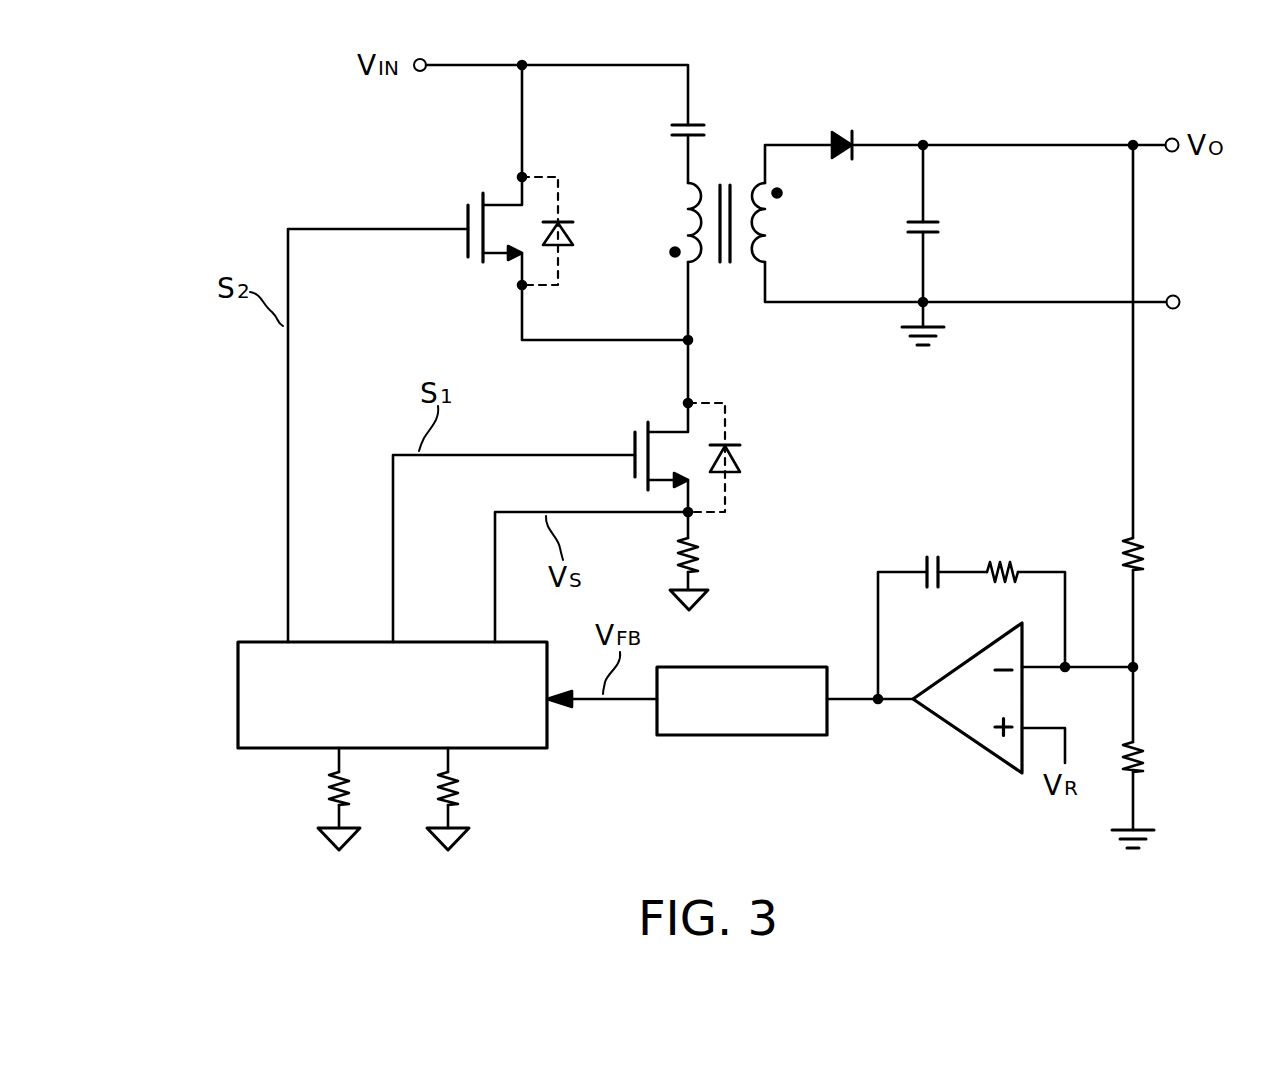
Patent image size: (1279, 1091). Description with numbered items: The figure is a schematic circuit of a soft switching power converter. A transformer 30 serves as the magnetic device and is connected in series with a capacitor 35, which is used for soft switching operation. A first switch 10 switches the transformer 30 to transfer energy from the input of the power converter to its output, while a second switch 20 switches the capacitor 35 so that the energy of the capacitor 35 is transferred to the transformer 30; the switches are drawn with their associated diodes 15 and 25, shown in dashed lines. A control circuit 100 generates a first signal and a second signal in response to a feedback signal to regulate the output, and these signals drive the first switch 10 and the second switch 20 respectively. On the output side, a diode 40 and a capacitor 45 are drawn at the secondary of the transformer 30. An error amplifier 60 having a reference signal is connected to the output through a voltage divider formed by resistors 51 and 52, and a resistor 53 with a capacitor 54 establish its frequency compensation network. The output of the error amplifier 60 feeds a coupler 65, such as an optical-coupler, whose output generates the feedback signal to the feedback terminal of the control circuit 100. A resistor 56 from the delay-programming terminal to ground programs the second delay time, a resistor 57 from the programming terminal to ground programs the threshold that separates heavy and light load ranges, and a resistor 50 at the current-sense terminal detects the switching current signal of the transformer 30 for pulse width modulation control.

The first switch 10 is at (630, 430).
The body diode of first transistor 15 is at (742, 460).
The second switch 20 is at (460, 205).
The body diode of second transistor 25 is at (573, 236).
The transformer 30 is at (725, 166).
The capacitor 35 is at (668, 130).
The output rectifier diode 40 is at (840, 132).
The output capacitor 45 is at (945, 226).
The resistor 50 is at (706, 553).
The resistor 51 is at (1150, 556).
The resistor 52 is at (1148, 752).
The resistor 53 is at (1004, 553).
The capacitor 54 is at (932, 553).
The resistor 56 is at (462, 788).
The resistor 57 is at (323, 793).
The error amplifier 60 is at (955, 733).
The coupler 65 is at (735, 740).
The control circuit 100 is at (236, 707).